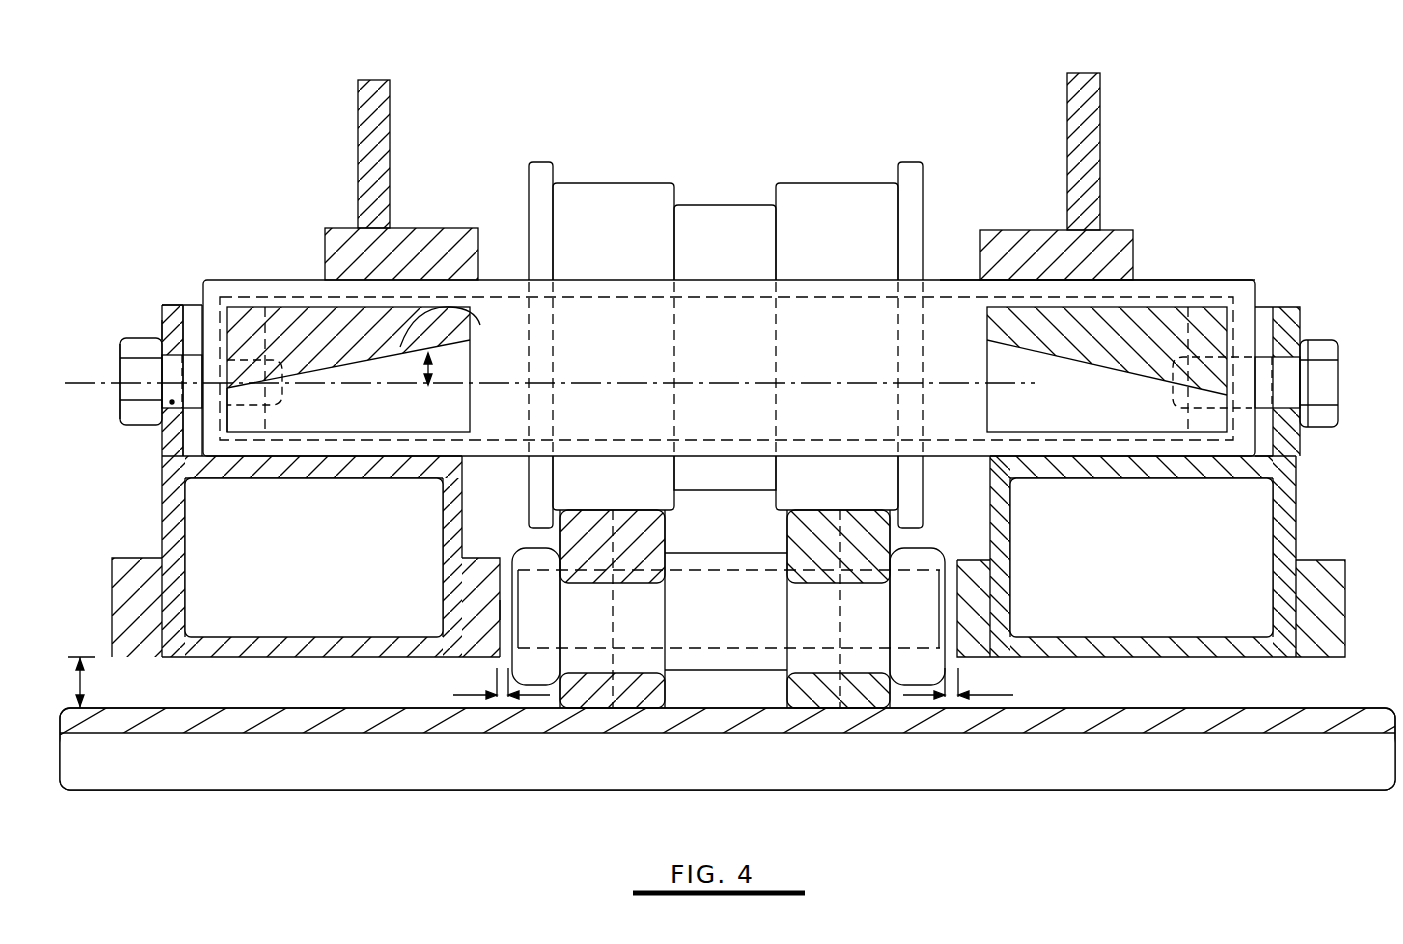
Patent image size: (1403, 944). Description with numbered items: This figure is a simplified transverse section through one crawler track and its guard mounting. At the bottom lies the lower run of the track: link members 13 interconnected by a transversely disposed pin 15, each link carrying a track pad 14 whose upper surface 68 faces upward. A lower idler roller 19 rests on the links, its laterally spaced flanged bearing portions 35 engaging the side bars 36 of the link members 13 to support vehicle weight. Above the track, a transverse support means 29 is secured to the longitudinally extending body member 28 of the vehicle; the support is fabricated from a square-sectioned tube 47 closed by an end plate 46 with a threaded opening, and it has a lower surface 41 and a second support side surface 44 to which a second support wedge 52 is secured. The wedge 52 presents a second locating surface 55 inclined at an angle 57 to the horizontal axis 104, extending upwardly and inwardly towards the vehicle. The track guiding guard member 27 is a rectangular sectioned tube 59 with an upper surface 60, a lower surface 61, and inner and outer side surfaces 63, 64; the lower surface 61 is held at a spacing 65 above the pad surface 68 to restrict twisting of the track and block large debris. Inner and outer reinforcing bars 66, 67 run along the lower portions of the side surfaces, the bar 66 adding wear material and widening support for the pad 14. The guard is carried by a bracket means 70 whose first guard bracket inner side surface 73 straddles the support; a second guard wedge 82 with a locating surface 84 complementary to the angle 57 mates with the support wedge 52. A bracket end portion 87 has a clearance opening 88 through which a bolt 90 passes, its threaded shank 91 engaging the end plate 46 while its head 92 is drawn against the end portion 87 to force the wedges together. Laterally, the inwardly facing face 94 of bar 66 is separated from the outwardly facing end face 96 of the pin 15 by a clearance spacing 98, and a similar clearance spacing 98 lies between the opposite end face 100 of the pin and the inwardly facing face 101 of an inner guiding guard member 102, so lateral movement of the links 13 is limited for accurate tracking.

The link member 13 is at (640, 690).
The track pad 14 is at (352, 752).
The pin 15 is at (712, 628).
The lower idler roller 19 is at (726, 305).
The track guiding guard member 27 is at (282, 577).
The body member 28 is at (330, 226).
The transverse support means 29 is at (205, 270).
The flanged bearing portion 35 is at (615, 185).
The side bar 36 is at (785, 528).
The support lower surface 41 is at (283, 480).
The second support side surface 44 is at (600, 315).
The end plate 46 is at (196, 300).
The square-sectioned tube 47 is at (952, 275).
The second support wedge 52 is at (458, 395).
The second locating surface 55 is at (477, 320).
The angle 57 is at (422, 372).
The rectangular sectioned tube 59 is at (190, 572).
The upper surface 60 is at (337, 452).
The lower surface 61 is at (282, 660).
The inner side surface 63 is at (462, 500).
The outer side surface 64 is at (160, 525).
The spacing 65 is at (85, 680).
The inner reinforcing bar 66 is at (482, 558).
The outer reinforcing bar 67 is at (125, 582).
The upper surface of pad 68 is at (318, 708).
The bracket means 70 is at (156, 310).
The first guard bracket inner side surface 73 is at (190, 318).
The second guard wedge 82 is at (377, 328).
The locating surface 84 is at (467, 348).
The bracket end portion 87 is at (158, 330).
The opening 88 is at (172, 402).
The bolt 90 is at (135, 408).
The threaded shank 91 is at (262, 398).
The head 92 is at (135, 345).
The inwardly facing face 94 is at (503, 630).
The outwardly facing end face 96 is at (507, 600).
The clearance spacing 98 is at (455, 693).
The end face 100 is at (945, 600).
The inwardly facing face 101 is at (965, 560).
The inner guiding guard member 102 is at (1302, 515).
The axis 104 is at (690, 380).